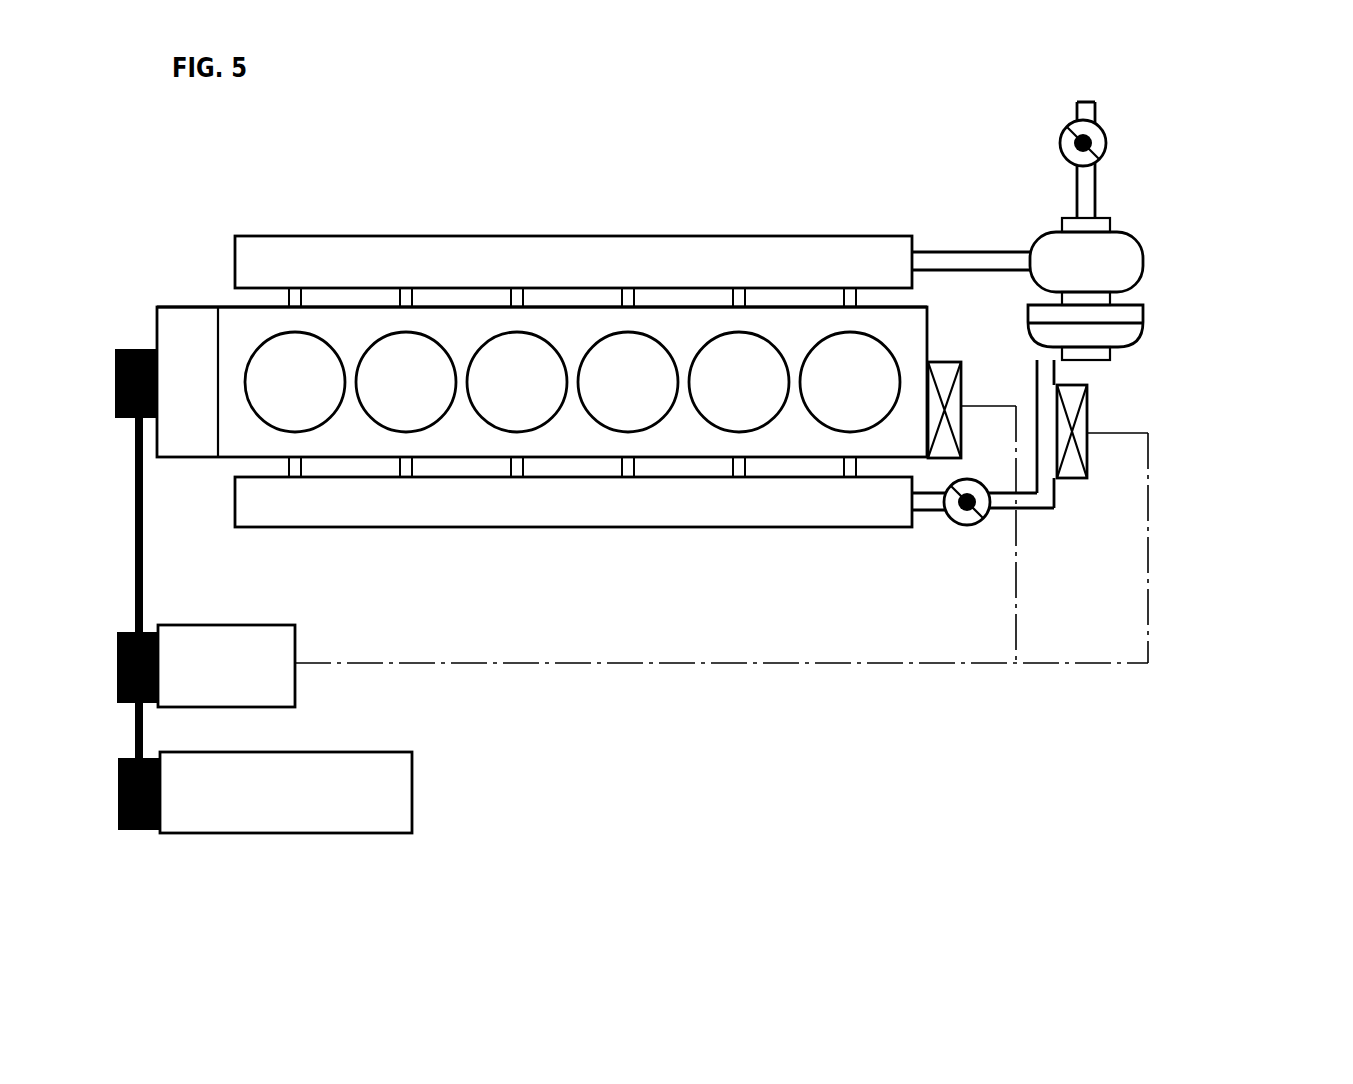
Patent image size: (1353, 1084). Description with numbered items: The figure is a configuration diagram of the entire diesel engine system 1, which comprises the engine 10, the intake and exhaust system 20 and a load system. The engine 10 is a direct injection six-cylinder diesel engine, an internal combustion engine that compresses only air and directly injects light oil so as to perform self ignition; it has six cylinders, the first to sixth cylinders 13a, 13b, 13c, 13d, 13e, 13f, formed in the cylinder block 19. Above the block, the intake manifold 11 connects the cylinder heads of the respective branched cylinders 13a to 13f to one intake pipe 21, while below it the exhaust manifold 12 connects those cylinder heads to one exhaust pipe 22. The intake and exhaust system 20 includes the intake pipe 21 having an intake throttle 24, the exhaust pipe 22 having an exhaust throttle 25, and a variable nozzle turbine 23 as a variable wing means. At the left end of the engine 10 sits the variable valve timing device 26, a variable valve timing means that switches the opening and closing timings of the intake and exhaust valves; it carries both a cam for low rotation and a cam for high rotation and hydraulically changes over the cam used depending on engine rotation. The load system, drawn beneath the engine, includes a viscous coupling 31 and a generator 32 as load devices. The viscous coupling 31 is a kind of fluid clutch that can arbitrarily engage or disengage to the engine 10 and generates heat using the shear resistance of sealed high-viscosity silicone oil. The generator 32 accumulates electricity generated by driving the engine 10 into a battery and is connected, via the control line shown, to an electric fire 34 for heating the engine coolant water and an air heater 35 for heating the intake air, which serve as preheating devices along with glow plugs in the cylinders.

The diesel engine system 1 is at (1209, 902).
The engine 10 is at (689, 564).
The intake manifold 11 is at (411, 528).
The exhaust manifold 12 is at (523, 238).
The first cylinder 13a is at (850, 382).
The second cylinder 13b is at (739, 382).
The third cylinder 13c is at (628, 382).
The fourth cylinder 13d is at (517, 382).
The fifth cylinder 13e is at (406, 382).
The sixth cylinder 13f is at (295, 382).
The cylinder block 19 is at (930, 307).
The intake and exhaust system 20 is at (1247, 307).
The intake pipe 21 is at (1060, 504).
The exhaust pipe 22 is at (963, 250).
The variable nozzle turbine 23 is at (1145, 258).
The intake throttle 24 is at (970, 527).
The exhaust throttle 25 is at (1110, 142).
The variable valve timing device 26 is at (168, 307).
The viscous coupling 31 is at (335, 835).
The generator 32 is at (297, 699).
The electric fire 34 is at (962, 362).
The air heater 35 is at (1088, 386).